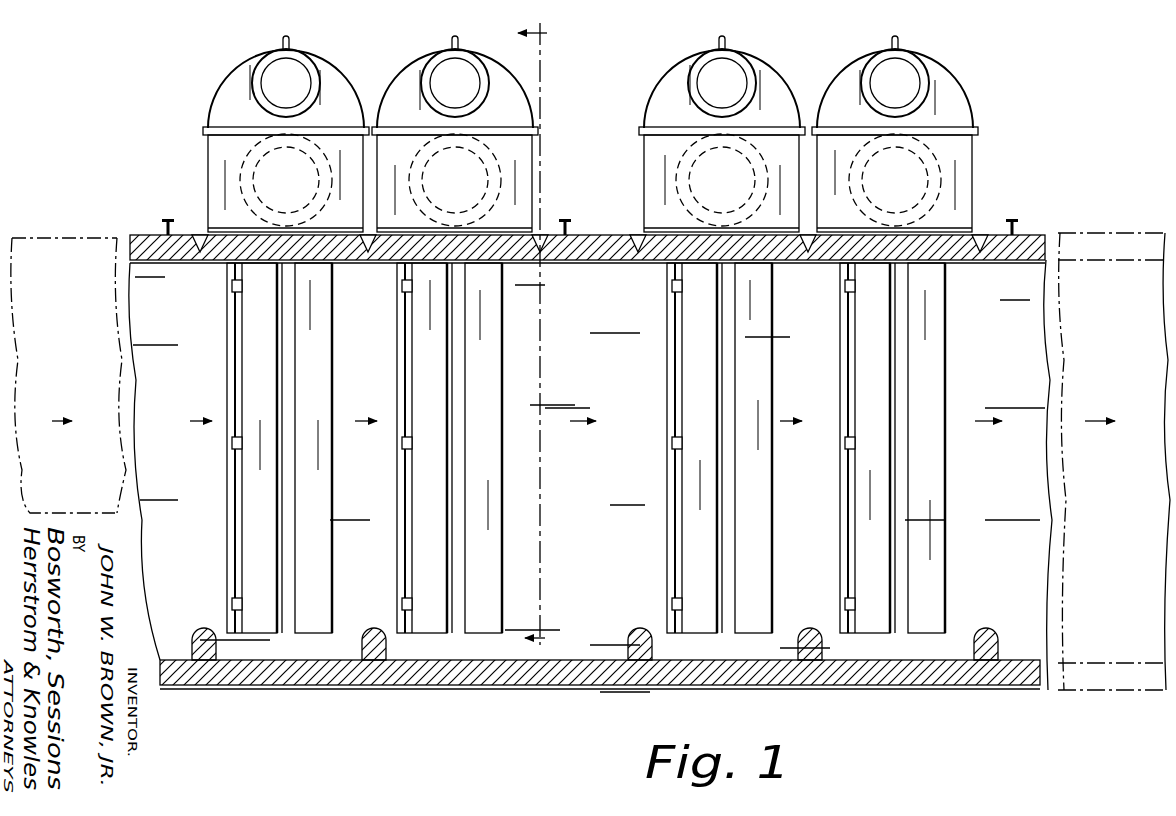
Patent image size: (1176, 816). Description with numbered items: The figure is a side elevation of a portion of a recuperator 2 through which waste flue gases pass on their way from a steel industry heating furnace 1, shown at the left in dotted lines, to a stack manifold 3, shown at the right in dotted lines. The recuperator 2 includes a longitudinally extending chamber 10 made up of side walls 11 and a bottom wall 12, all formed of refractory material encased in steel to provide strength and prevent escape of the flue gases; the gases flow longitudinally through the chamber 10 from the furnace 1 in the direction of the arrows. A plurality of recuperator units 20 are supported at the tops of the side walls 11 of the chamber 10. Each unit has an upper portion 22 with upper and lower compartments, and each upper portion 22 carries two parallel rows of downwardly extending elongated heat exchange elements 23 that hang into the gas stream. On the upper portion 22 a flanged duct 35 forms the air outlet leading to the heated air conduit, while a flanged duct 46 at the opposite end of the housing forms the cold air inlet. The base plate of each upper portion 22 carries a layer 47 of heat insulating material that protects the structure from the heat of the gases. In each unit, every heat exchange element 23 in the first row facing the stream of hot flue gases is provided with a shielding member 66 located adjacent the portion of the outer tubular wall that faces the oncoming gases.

The heating furnace 1 is at (73, 236).
The recuperator 2 is at (576, 278).
The stack manifold 3 is at (1105, 232).
The longitudinally extending chamber 10 is at (900, 652).
The side walls 11 is at (1005, 569).
The bottom wall 12 is at (509, 677).
The recuperator units 20 is at (415, 55).
The upper portion 22 is at (208, 176).
The heat exchange elements 23 is at (253, 353).
The flanged duct 35 is at (320, 148).
The flanged duct 46 is at (263, 62).
The layer of heat insulating material 47 is at (387, 263).
The shielding member 66 is at (235, 512).